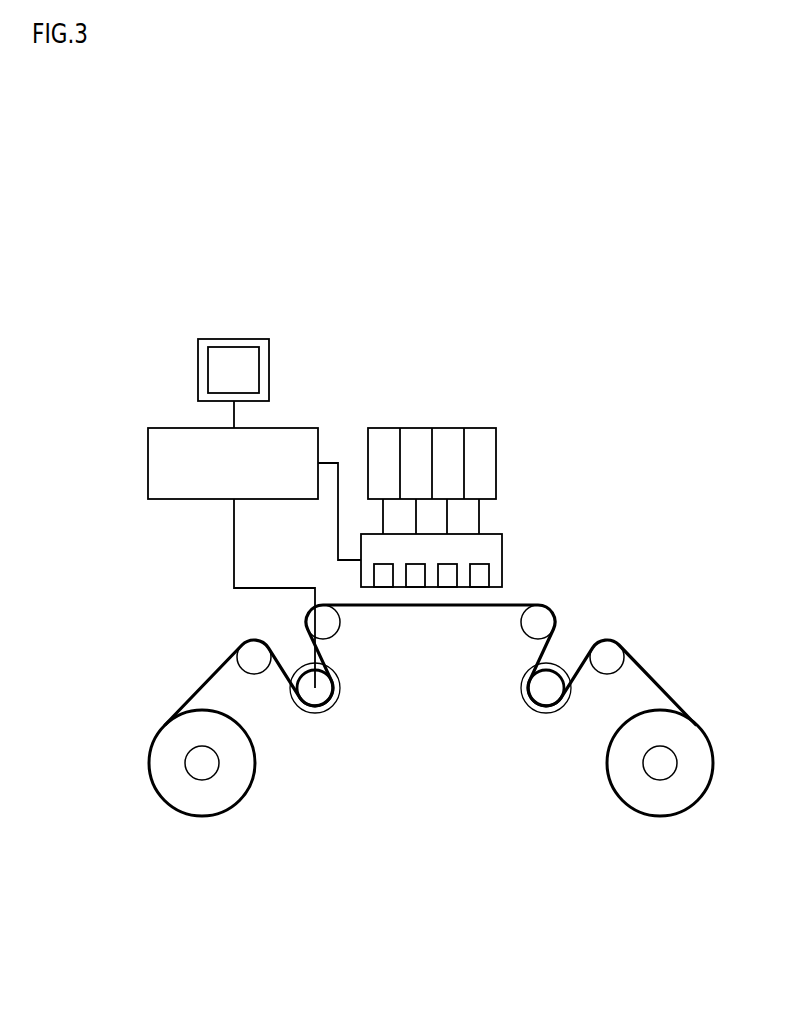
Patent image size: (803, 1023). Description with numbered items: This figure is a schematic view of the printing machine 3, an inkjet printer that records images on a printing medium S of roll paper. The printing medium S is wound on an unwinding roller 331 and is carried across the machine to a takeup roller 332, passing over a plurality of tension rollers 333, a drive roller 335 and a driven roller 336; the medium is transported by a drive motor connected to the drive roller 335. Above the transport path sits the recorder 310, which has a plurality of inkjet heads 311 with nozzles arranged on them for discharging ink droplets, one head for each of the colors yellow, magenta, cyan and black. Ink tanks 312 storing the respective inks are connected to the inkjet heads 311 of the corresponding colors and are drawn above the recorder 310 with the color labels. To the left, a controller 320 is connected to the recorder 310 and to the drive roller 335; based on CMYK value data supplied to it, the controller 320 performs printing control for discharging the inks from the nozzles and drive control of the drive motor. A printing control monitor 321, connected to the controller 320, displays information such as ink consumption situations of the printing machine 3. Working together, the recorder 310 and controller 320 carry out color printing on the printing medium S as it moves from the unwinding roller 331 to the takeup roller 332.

The printing machine 3 is at (441, 304).
The recorder 310 is at (502, 559).
The inkjet heads 311 is at (479, 587).
The ink tanks 312 is at (479, 428).
The controller 320 is at (148, 462).
The printing control monitor 321 is at (270, 369).
The unwinding roller 331 is at (660, 780).
The takeup roller 332 is at (202, 780).
The tension rollers 333 is at (255, 660).
The drive roller 335 is at (322, 700).
The driven roller 336 is at (543, 700).
The printing medium S is at (518, 603).